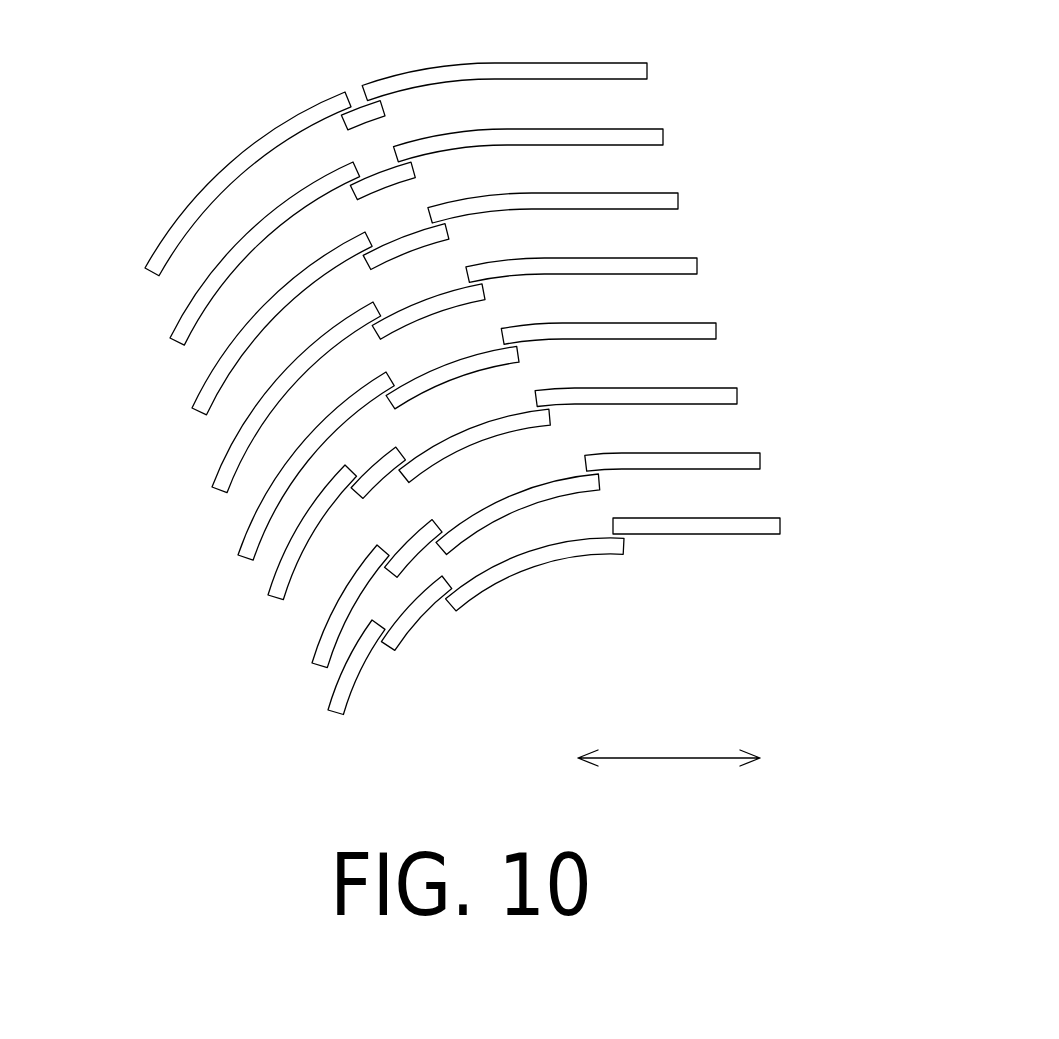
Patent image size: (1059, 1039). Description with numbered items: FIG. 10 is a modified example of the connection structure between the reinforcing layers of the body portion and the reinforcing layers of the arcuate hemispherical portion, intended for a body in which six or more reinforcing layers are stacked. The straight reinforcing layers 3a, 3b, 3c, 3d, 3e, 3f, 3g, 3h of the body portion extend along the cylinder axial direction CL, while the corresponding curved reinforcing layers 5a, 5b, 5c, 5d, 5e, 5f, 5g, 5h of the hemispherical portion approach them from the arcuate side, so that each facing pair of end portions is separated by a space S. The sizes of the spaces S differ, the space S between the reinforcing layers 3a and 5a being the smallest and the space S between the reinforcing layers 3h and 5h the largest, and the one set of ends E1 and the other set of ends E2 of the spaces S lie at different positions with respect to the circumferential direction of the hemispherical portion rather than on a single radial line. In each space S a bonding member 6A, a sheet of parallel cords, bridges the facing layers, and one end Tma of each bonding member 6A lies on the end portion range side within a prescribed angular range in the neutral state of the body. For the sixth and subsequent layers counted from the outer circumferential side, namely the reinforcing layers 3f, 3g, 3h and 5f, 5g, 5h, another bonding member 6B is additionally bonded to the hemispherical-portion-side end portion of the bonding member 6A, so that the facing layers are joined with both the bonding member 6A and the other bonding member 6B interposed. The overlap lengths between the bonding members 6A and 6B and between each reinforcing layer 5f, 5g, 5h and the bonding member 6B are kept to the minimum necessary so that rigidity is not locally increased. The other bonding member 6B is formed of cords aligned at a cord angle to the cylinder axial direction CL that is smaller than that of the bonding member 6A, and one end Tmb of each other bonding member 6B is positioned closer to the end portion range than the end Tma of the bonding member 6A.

The reinforcing layer 3a is at (622, 72).
The reinforcing layer 3b is at (645, 138).
The reinforcing layer 3c is at (663, 202).
The reinforcing layer 3d is at (680, 267).
The reinforcing layer 3e is at (700, 332).
The reinforcing layer 3f is at (705, 396).
The reinforcing layer 3g is at (745, 462).
The reinforcing layer 3h is at (755, 527).
The reinforcing layer 5a is at (155, 247).
The reinforcing layer 5b is at (182, 314).
The reinforcing layer 5c is at (205, 386).
The reinforcing layer 5d is at (230, 458).
The reinforcing layer 5e is at (252, 533).
The reinforcing layer 5f is at (282, 570).
The reinforcing layer 5g is at (322, 632).
The reinforcing layer 5h is at (340, 687).
The bonding member 6A is at (371, 103).
The other bonding member 6B is at (403, 455).
The end of space E1 is at (388, 372).
The end of space E2 is at (489, 333).
The space S is at (430, 210).
The one end of bonding member Tma is at (387, 400).
The one end of other bonding member Tmb is at (375, 670).
The cylinder axial direction CL is at (669, 746).